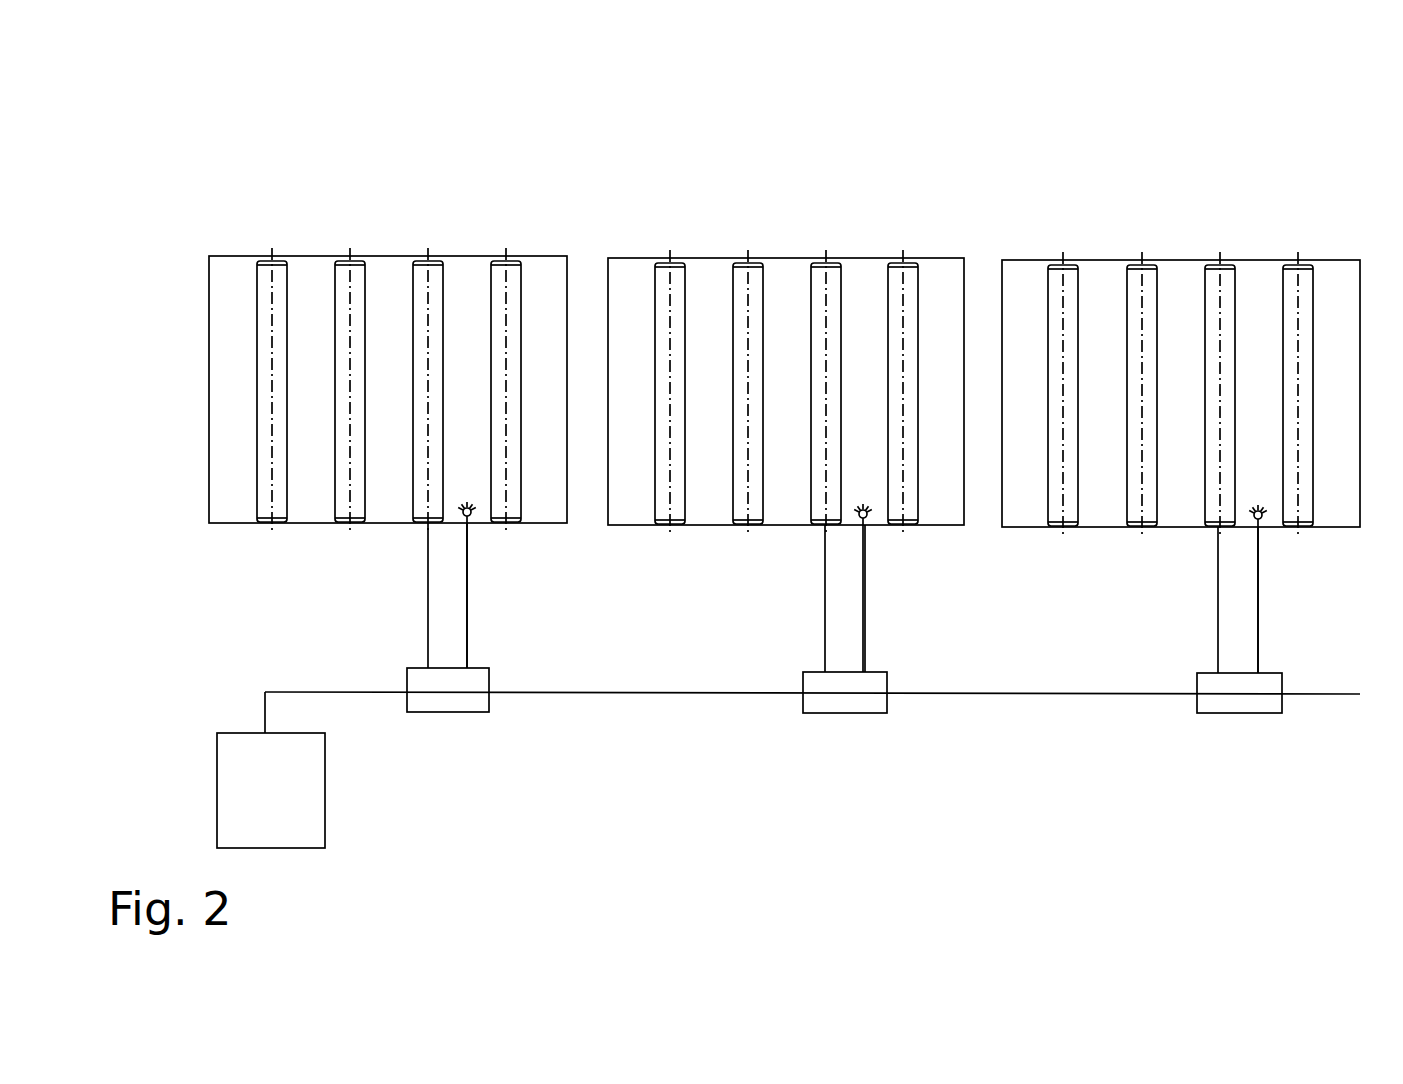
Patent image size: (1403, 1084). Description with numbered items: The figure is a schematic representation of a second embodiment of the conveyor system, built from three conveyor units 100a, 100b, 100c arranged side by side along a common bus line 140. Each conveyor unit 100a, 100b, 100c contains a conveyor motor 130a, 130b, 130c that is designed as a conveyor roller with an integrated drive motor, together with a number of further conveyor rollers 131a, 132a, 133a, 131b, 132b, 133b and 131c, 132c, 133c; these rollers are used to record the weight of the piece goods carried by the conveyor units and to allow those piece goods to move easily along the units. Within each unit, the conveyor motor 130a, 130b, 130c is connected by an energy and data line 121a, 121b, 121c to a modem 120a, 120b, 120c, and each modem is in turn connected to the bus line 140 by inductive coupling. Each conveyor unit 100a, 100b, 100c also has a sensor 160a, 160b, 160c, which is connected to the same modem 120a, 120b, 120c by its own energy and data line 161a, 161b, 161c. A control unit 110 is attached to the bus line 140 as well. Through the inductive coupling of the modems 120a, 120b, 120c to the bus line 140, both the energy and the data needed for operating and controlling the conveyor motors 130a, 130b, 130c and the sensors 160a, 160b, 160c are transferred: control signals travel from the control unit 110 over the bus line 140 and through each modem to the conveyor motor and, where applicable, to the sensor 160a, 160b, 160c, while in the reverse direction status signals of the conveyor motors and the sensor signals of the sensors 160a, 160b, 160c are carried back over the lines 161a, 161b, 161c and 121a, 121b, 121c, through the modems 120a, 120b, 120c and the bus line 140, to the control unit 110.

The conveyor unit 100a is at (452, 155).
The conveyor unit 100b is at (855, 137).
The conveyor unit 100c is at (1239, 147).
The control unit 110 is at (310, 832).
The modem 120a is at (480, 703).
The modem 120b is at (873, 707).
The modem 120c is at (1258, 705).
The energy and data line 121a is at (428, 588).
The energy and data line 121b is at (825, 590).
The energy and data line 121c is at (1218, 600).
The conveyor motor 130a is at (428, 258).
The conveyor motor 130b is at (825, 263).
The conveyor motor 130c is at (1218, 265).
The conveyor roller 131a is at (263, 258).
The conveyor roller 131b is at (670, 263).
The conveyor roller 131c is at (1057, 265).
The conveyor roller 132a is at (343, 259).
The conveyor roller 132b is at (752, 263).
The conveyor roller 132c is at (1147, 265).
The conveyor roller 133a is at (505, 258).
The conveyor roller 133b is at (903, 263).
The conveyor roller 133c is at (1292, 265).
The bus line 140 is at (365, 693).
The sensor 160a is at (471, 515).
The sensor 160b is at (867, 518).
The sensor 160c is at (1262, 518).
The energy and data line 161a is at (467, 607).
The energy and data line 161b is at (865, 612).
The energy and data line 161c is at (1258, 610).